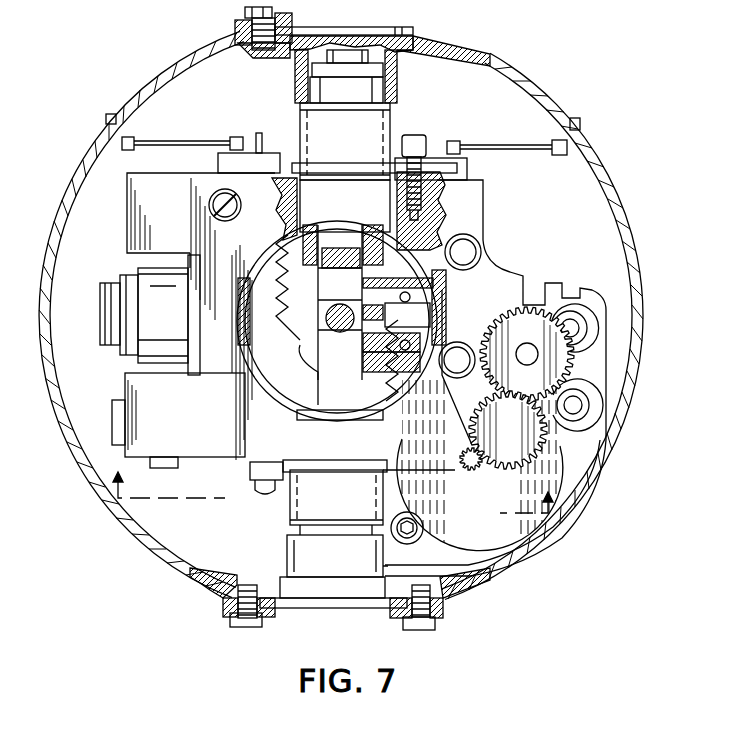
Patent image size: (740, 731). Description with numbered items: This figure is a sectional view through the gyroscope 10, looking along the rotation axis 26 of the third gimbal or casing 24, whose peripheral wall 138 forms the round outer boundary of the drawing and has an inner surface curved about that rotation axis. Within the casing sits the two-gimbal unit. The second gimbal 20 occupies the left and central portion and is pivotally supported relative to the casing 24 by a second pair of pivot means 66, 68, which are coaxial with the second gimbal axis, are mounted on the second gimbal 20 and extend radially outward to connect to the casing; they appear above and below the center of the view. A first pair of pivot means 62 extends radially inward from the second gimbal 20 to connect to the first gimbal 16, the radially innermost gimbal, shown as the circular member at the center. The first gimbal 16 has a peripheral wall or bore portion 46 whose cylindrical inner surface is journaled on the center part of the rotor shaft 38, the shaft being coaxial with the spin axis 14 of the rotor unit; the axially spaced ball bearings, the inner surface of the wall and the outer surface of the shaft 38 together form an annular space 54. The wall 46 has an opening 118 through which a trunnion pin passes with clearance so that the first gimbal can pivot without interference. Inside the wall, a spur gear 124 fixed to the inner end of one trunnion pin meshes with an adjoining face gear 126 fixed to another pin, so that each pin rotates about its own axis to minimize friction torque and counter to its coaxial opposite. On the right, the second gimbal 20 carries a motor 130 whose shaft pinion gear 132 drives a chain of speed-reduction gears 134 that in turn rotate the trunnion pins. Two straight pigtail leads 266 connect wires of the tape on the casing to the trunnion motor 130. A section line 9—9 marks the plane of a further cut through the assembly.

The gyroscope 10 is at (585, 128).
The peripheral wall 138 is at (637, 376).
The pigtail leads 266 is at (158, 140).
The pivot means 66 is at (334, 140).
The face gear 126 is at (320, 230).
The first gimbal 16 is at (280, 306).
The opening 118 is at (275, 233).
The spur gear 124 is at (366, 292).
The rotation axis 26 is at (302, 345).
The spin axis 14 is at (280, 338).
The shaft 38 is at (322, 345).
The annular space 54 is at (340, 322).
The second gimbal 20 is at (186, 415).
The pivot means 62 is at (176, 313).
The section line 9- 9 is at (338, 491).
The pivot means 68 is at (332, 503).
The peripheral wall 46 is at (440, 240).
The third gimbal 24 is at (618, 412).
The motor 130 is at (450, 419).
The speed-reduction gears 134 is at (490, 420).
The shaft pinion gear 132 is at (460, 458).